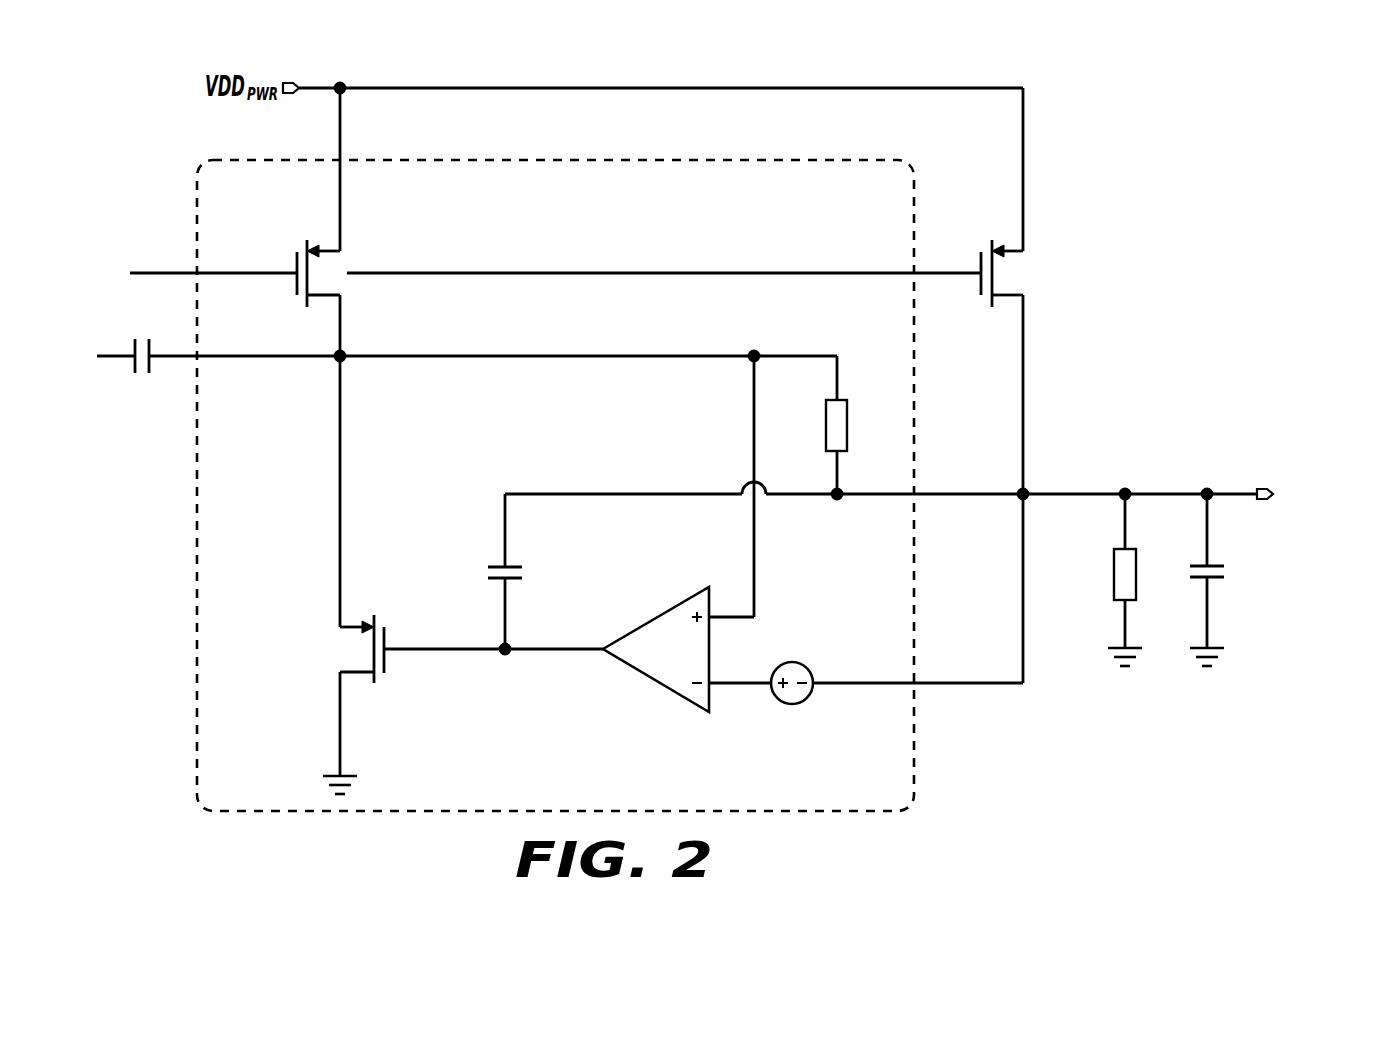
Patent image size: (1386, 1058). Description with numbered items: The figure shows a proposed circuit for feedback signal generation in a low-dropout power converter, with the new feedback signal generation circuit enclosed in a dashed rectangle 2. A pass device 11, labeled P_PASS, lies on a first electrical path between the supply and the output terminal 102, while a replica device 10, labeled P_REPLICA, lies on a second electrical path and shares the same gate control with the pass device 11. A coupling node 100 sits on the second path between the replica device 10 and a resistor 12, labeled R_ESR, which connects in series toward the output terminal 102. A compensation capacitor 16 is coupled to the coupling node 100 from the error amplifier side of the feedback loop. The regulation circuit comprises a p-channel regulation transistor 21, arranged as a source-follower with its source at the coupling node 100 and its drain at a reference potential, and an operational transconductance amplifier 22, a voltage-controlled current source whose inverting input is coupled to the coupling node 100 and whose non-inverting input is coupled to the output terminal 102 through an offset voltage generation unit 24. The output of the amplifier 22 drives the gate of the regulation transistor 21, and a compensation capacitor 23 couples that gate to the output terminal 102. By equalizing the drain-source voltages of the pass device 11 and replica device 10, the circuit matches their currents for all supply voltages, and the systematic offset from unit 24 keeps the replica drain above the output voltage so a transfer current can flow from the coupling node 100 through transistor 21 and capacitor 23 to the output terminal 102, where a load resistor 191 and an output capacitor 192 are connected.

The dashed rectangle 2 is at (869, 160).
The replica device 10 is at (340, 262).
The pass device 11 is at (1018, 262).
The resistor 12 is at (848, 418).
The compensation capacitor 16 is at (133, 345).
The regulation transistor 21 is at (352, 688).
The operational transconductance amplifier 22 is at (665, 688).
The compensation capacitor 23 is at (528, 573).
The offset voltage generation unit 24 is at (808, 666).
The coupling node 100 is at (345, 347).
The output terminal 102 is at (1260, 489).
The load resistor 191 is at (1114, 588).
The output capacitor 192 is at (1230, 572).